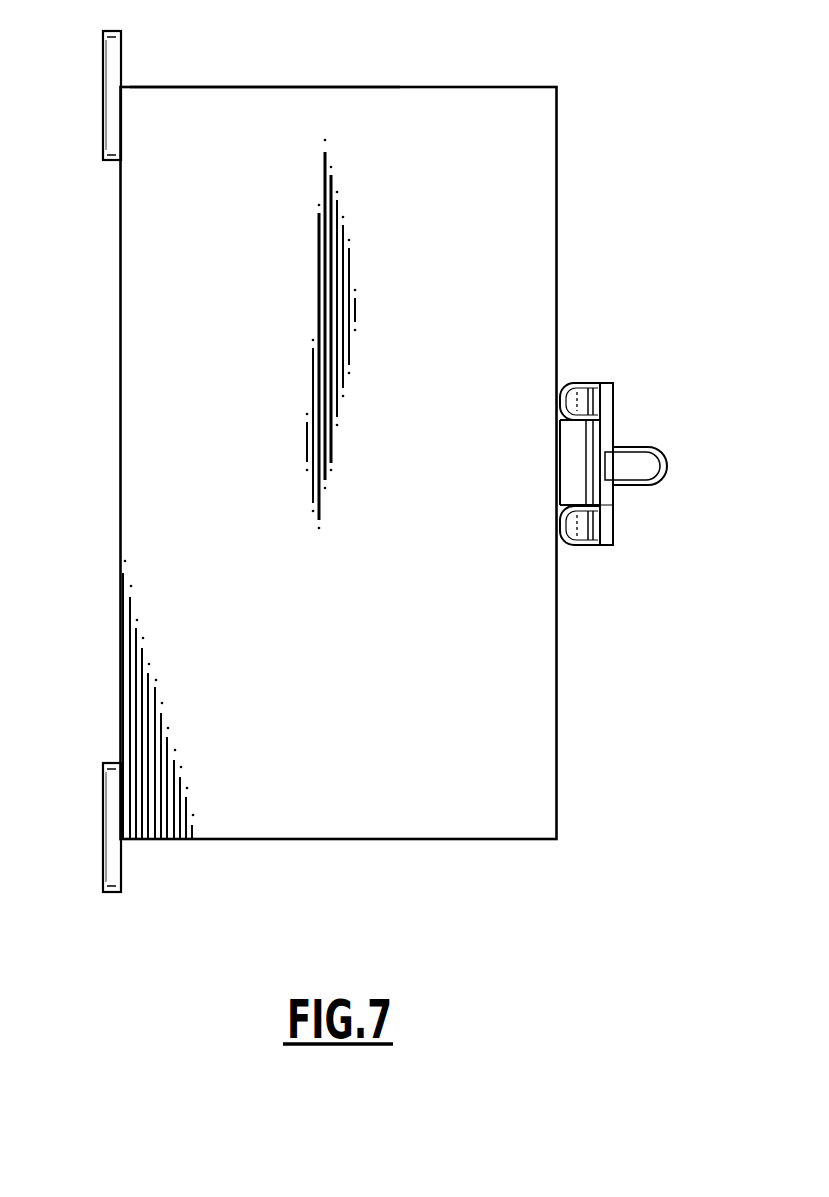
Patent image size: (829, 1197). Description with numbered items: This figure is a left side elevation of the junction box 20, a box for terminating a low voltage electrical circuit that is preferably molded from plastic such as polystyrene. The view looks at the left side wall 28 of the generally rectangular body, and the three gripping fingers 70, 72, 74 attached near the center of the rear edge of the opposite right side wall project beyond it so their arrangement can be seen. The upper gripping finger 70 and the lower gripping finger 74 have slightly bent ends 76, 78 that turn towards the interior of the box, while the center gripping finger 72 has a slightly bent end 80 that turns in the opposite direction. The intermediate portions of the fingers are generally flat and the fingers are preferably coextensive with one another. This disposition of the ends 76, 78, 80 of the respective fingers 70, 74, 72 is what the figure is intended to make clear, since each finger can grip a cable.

The junction box 20 is at (268, 78).
The left side wall 28 is at (152, 442).
The upper gripping finger 70 is at (613, 405).
The center gripping finger 72 is at (645, 447).
The lower gripping finger 74 is at (613, 532).
The bent end of upper gripping finger 76 is at (560, 403).
The bent end of lower gripping finger 78 is at (562, 528).
The bent end of center gripping finger 80 is at (653, 468).